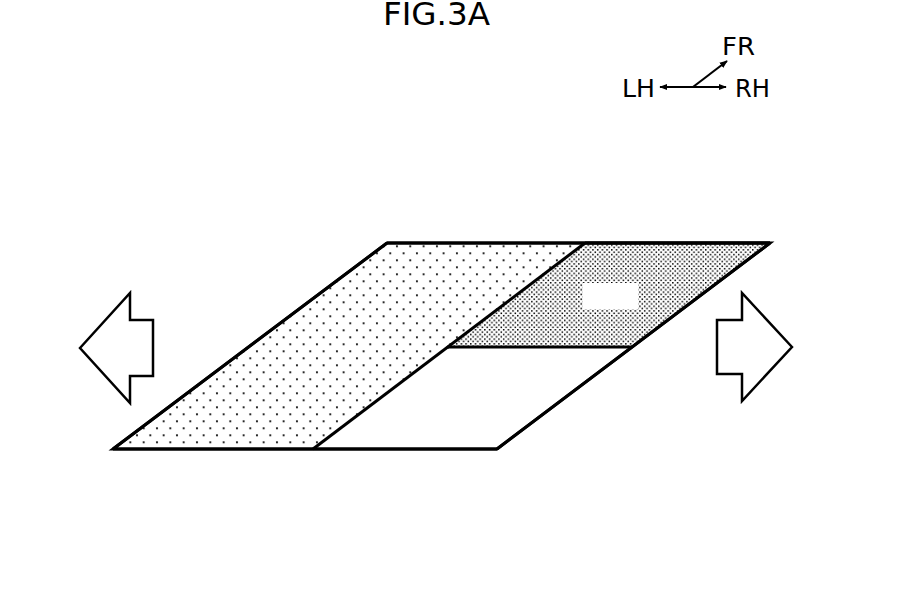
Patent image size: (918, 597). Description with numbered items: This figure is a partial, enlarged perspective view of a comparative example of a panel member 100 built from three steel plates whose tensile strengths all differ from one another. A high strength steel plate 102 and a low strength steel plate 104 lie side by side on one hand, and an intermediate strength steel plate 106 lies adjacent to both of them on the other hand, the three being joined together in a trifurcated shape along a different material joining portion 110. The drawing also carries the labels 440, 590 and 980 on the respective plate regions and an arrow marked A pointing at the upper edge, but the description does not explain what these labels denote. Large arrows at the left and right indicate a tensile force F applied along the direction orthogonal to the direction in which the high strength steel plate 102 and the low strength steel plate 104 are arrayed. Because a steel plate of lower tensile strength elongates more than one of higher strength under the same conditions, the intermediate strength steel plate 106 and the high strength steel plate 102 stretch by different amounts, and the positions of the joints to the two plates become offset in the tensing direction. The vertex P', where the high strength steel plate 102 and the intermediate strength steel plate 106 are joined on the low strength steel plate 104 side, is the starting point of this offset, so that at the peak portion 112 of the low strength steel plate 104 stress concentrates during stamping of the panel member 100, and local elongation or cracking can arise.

The panel member 100 is at (742, 230).
The high strength steel plate 102 is at (729, 263).
The low strength steel plate 104 is at (533, 403).
The intermediate strength steel plate 106 is at (280, 342).
The different material joining portion 110 is at (346, 435).
The peak portion 112 is at (448, 362).
The unreinforced region 440 is at (472, 398).
The first reinforced region 590 is at (349, 346).
The second reinforced region 980 is at (609, 295).
The region A is at (622, 241).
The vertex P' is at (467, 266).
The tensile force F is at (108, 357).